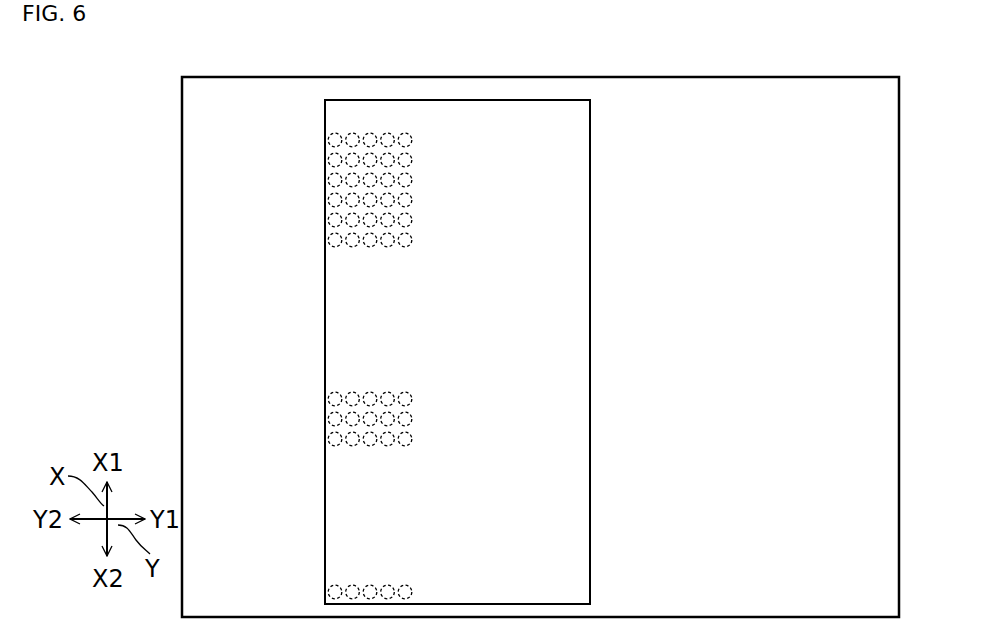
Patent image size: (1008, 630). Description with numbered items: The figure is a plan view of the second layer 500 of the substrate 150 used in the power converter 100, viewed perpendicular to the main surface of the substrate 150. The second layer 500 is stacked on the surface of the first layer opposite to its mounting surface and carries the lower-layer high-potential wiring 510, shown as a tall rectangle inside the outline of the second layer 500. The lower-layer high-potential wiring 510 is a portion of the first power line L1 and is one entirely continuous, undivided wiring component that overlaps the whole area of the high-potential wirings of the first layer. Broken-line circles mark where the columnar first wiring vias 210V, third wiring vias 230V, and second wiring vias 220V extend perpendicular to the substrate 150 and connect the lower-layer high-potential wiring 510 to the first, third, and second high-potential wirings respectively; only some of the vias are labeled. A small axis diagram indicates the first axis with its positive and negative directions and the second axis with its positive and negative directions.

The substrate 150 is at (470, 347).
The second layer 500 is at (179, 140).
The power converter 100 is at (160, 253).
The lower-layer high-potential wiring 510 is at (389, 352).
The first power line L1 is at (325, 315).
The first wiring vias 210V is at (412, 180).
The third wiring vias 230V is at (412, 419).
The second wiring vias 220V is at (412, 592).